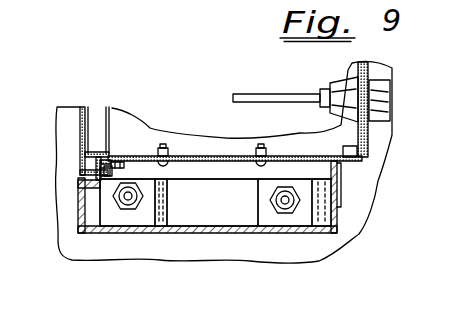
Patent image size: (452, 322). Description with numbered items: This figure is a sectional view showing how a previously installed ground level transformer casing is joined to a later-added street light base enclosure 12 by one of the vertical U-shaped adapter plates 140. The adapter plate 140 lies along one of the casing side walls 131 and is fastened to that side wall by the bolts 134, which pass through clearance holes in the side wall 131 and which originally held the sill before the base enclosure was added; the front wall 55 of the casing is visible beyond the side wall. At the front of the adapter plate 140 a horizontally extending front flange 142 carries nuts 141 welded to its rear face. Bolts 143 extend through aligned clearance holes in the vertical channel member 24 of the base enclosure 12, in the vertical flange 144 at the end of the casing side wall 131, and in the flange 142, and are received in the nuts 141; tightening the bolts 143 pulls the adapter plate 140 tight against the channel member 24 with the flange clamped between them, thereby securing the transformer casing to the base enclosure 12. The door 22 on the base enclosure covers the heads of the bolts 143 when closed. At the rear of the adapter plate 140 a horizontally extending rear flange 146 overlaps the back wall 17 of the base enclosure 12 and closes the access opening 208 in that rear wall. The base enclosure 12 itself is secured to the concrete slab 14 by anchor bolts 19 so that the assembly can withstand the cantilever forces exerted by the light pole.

The base enclosure 12 is at (87, 234).
The concrete slab 14 is at (240, 250).
The back wall 17 is at (336, 221).
The anchor bolts 19 is at (138, 200).
The door 22 is at (80, 140).
The vertical channel member 24 is at (82, 192).
The front wall 55 is at (392, 130).
The casing side walls 131 is at (340, 163).
The bolts 134 is at (163, 146).
The adapter plates 140 is at (233, 163).
The nuts 141 is at (119, 158).
The front flange 142 is at (108, 174).
The bolts 143 is at (124, 165).
The vertical flange 144 is at (114, 157).
The rear flange 146 is at (340, 201).
The access opening 208 is at (329, 160).